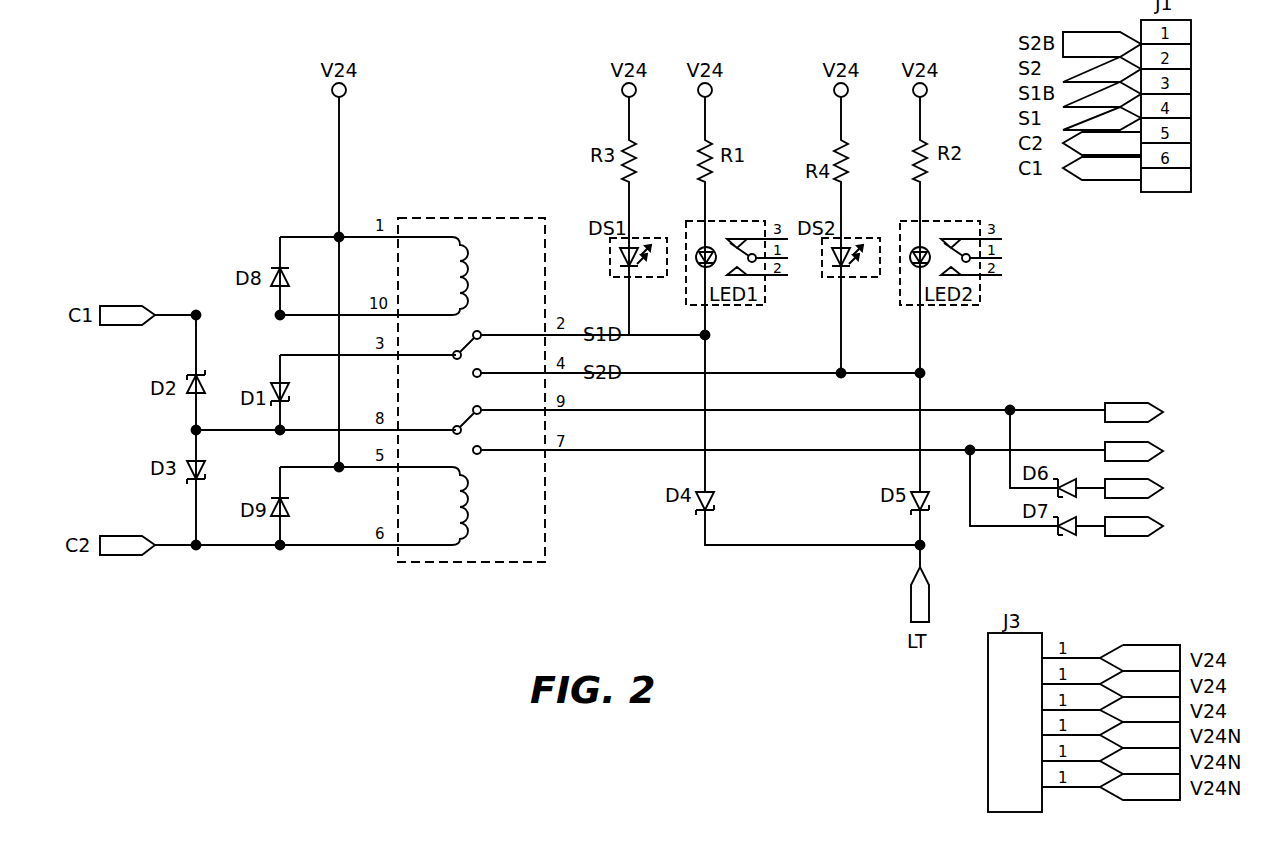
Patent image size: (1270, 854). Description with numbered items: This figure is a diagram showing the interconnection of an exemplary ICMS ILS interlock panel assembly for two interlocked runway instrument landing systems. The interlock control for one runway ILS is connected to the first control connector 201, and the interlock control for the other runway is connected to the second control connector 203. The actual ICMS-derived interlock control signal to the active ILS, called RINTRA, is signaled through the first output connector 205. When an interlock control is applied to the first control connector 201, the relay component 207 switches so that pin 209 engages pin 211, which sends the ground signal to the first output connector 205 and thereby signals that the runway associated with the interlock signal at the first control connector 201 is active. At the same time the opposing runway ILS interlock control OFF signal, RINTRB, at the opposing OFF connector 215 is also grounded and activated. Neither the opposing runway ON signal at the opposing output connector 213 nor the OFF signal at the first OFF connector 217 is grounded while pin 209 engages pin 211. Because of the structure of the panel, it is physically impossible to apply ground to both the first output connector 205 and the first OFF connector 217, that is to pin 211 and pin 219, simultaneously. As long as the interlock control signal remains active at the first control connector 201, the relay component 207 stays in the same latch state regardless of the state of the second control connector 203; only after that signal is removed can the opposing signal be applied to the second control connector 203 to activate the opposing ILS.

The connector C1 201 is at (108, 287).
The connector C2 203 is at (120, 568).
The connector S1 205 is at (1153, 395).
The relay component 207 is at (448, 563).
The pin 209 is at (453, 432).
The pin 211 is at (481, 405).
The connector S2 213 is at (1158, 440).
The connector S2B 215 is at (1160, 498).
The connector S1B 217 is at (1155, 535).
The pin 219 is at (481, 455).